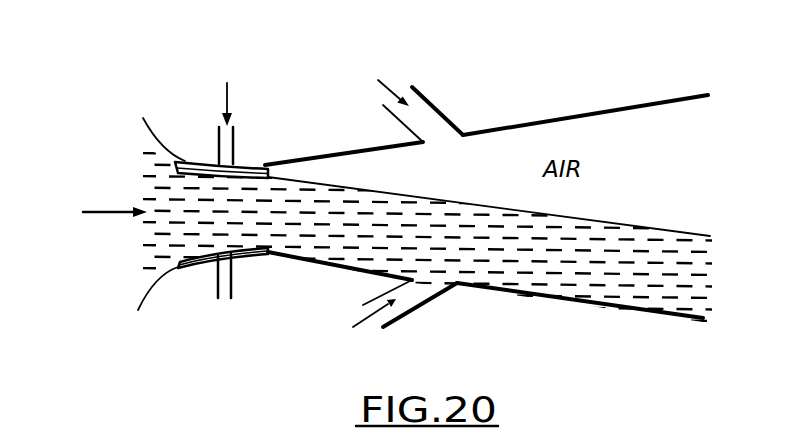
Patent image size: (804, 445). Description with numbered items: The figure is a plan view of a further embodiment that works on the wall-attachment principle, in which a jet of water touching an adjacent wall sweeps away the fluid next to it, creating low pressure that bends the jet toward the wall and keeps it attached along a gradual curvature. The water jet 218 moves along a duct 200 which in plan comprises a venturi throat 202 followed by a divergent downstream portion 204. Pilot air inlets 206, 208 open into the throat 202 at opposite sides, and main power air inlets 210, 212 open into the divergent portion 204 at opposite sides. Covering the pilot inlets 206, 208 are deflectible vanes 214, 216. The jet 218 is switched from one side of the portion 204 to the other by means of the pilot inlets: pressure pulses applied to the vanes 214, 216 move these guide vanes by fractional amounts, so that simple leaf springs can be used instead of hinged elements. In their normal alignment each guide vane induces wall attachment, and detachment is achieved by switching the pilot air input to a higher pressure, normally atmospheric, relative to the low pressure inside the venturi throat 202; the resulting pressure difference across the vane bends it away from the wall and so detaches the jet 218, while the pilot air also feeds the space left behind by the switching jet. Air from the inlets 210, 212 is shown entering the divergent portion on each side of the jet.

The duct 200 is at (311, 148).
The venturi throat 202 is at (251, 257).
The divergent downstream portion 204 is at (585, 303).
The pilot air inlet 206 is at (217, 160).
The pilot air inlet 208 is at (215, 285).
The main power air inlet 210 is at (450, 115).
The main power air inlet 212 is at (440, 295).
The deflectible vane 214 is at (205, 176).
The deflectible vane 216 is at (198, 255).
The jet 218 is at (657, 237).